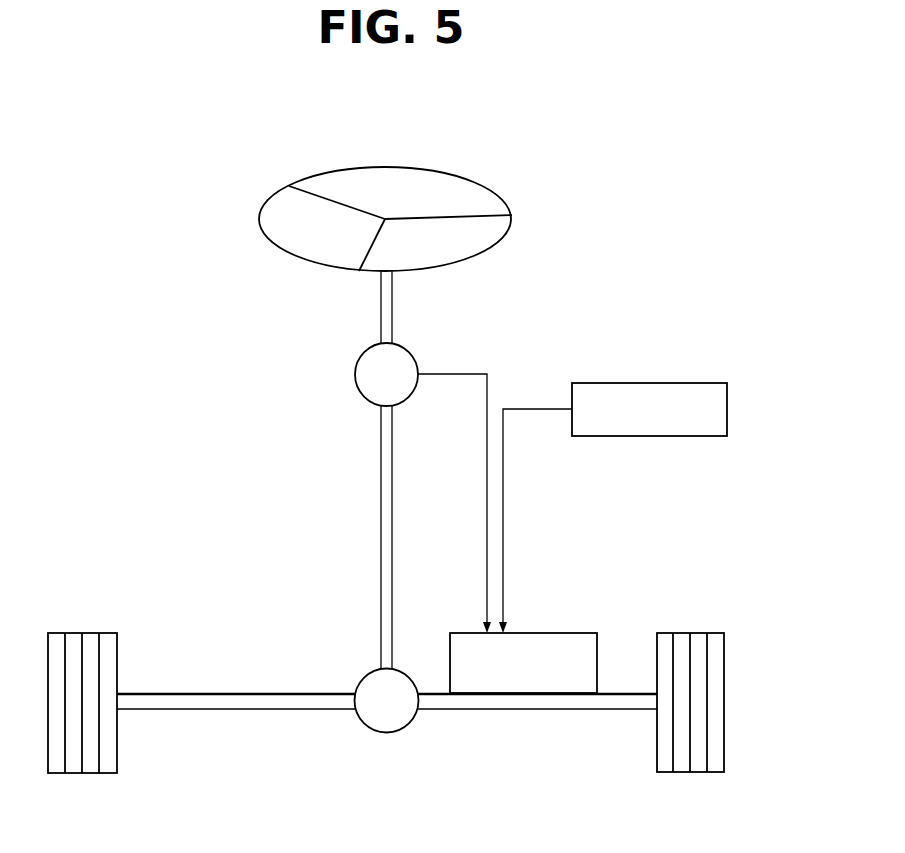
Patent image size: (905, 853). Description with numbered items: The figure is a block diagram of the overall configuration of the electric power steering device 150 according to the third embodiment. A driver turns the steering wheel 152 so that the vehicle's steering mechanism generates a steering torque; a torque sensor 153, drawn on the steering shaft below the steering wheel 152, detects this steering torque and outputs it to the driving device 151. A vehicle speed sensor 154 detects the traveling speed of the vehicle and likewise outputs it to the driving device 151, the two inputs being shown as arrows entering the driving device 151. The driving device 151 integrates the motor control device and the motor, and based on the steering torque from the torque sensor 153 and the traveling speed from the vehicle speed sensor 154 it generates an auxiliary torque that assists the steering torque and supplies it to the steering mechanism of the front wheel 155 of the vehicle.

The electric power steering device 150 is at (520, 137).
The driving device 151 is at (555, 632).
The steering wheel 152 is at (297, 185).
The torque sensor 153 is at (355, 375).
The vehicle speed sensor 154 is at (667, 383).
The front wheel 155 is at (724, 648).